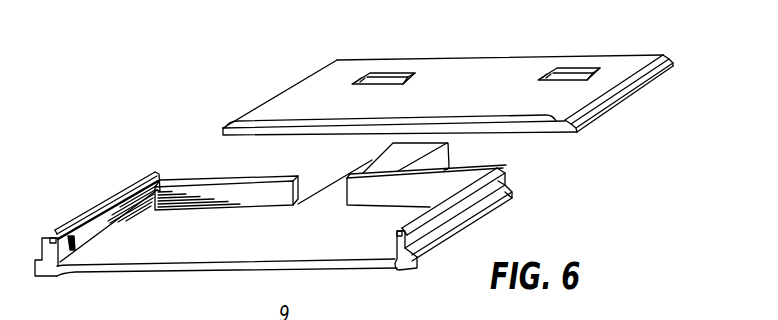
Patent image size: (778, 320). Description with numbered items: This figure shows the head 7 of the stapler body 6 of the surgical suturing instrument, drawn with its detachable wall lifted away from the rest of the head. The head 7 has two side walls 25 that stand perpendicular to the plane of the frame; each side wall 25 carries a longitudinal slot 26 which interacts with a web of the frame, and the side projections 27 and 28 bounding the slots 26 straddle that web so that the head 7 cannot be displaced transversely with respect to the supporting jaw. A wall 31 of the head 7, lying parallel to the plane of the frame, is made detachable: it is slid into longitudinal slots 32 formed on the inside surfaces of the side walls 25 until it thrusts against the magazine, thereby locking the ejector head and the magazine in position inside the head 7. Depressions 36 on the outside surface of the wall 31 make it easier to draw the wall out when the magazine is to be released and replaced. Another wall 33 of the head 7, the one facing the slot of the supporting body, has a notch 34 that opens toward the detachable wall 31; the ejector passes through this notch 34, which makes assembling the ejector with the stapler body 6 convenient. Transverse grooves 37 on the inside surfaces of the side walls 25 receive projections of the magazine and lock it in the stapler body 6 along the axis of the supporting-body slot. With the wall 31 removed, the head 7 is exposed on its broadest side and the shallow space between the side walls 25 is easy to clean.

The stapler body 6 is at (372, 163).
The head 7 is at (208, 148).
The side walls 25 is at (55, 276).
The longitudinal slots 26 is at (42, 259).
The side projection 27 is at (507, 172).
The side projection 28 is at (511, 206).
The detachable wall 31 is at (450, 72).
The longitudinal slots 32 is at (50, 237).
The wall 33 is at (202, 190).
The notch 34 is at (298, 194).
The depressions 36 is at (571, 76).
The transverse grooves 37 is at (73, 238).